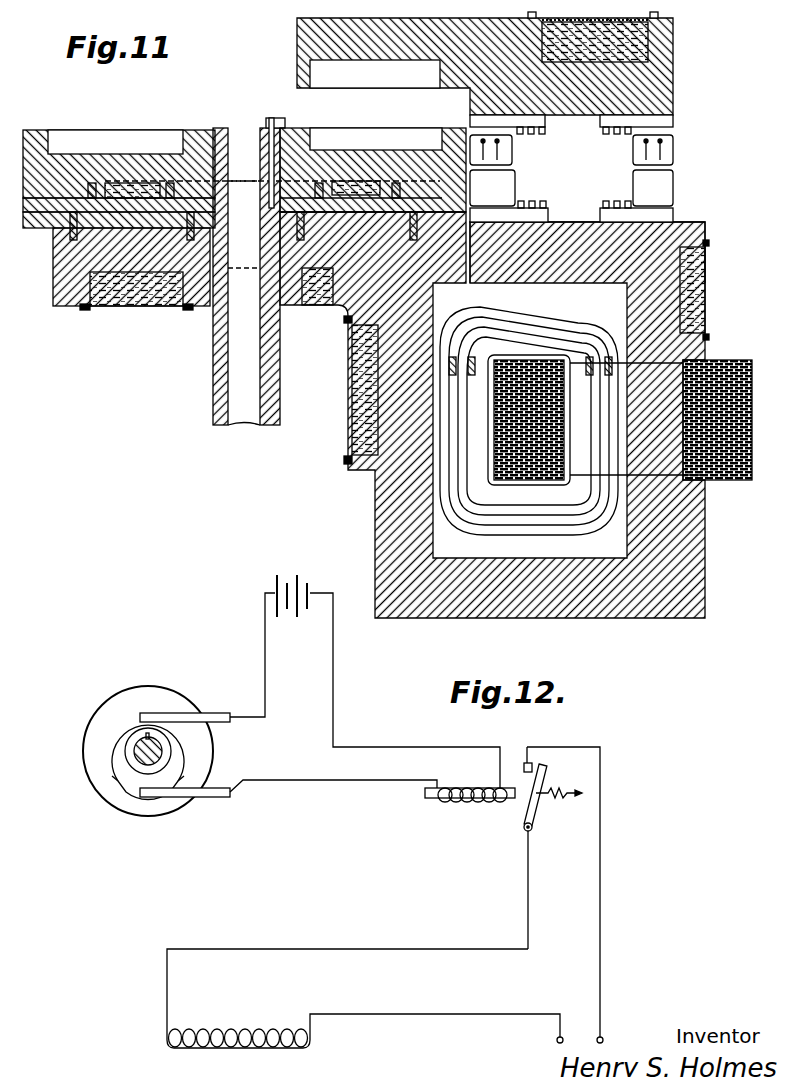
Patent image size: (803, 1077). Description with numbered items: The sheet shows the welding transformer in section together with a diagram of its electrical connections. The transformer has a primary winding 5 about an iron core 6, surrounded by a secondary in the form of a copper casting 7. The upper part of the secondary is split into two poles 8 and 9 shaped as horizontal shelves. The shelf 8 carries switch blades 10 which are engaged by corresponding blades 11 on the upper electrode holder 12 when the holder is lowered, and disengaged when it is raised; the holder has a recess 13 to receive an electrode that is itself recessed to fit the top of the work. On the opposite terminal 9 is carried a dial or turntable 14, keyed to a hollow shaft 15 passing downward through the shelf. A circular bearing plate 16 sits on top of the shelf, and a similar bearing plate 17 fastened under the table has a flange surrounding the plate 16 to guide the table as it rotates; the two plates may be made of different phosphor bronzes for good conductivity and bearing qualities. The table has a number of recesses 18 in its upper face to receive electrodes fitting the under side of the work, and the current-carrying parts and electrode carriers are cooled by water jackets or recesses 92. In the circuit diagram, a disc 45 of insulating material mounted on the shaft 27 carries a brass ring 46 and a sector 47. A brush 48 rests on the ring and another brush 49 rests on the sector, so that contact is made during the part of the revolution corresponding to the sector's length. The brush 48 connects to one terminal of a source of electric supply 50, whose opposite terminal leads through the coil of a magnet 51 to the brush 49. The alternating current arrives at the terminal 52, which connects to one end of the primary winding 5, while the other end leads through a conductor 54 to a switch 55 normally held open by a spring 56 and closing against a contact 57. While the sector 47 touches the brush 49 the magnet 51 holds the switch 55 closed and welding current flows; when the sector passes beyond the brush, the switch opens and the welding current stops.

In FIG. 11, the primary winding 5 is at (581, 323).
In FIG. 12, the primary winding 5 is at (236, 1031).
In FIG. 11, the iron core 6 is at (516, 355).
In FIG. 11, the copper casting 7 is at (392, 510).
In FIG. 11, the pole 8 is at (570, 230).
In FIG. 11, the pole 9 is at (150, 283).
In FIG. 11, the switch blades 10 is at (668, 188).
In FIG. 11, the blades 11 is at (672, 148).
In FIG. 11, the upper electrode holder 12 is at (297, 46).
In FIG. 11, the recess 13 is at (375, 74).
In FIG. 11, the dial or turntable 14 is at (190, 136).
In FIG. 11, the hollow shaft 15 is at (216, 357).
In FIG. 11, the circular bearing plate 16 is at (60, 224).
In FIG. 11, the bearing plate 17 is at (68, 232).
In FIG. 11, the recesses 18 is at (358, 140).
In FIG. 12, the shaft 27 is at (142, 752).
In FIG. 12, the disc 45 is at (92, 712).
In FIG. 12, the brass ring 46 is at (132, 722).
In FIG. 12, the sector 47 is at (150, 800).
In FIG. 12, the brush 48 is at (206, 712).
In FIG. 12, the brush 49 is at (210, 797).
In FIG. 12, the source of electric supply 50 is at (273, 592).
In FIG. 12, the magnet 51 is at (481, 804).
In FIG. 12, the terminal 52 is at (556, 1040).
In FIG. 12, the conductor 54 is at (340, 948).
In FIG. 12, the switch 55 is at (545, 815).
In FIG. 12, the spring 56 is at (556, 790).
In FIG. 12, the contact 57 is at (526, 763).
In FIG. 11, the water jackets or recesses 92 is at (125, 186).